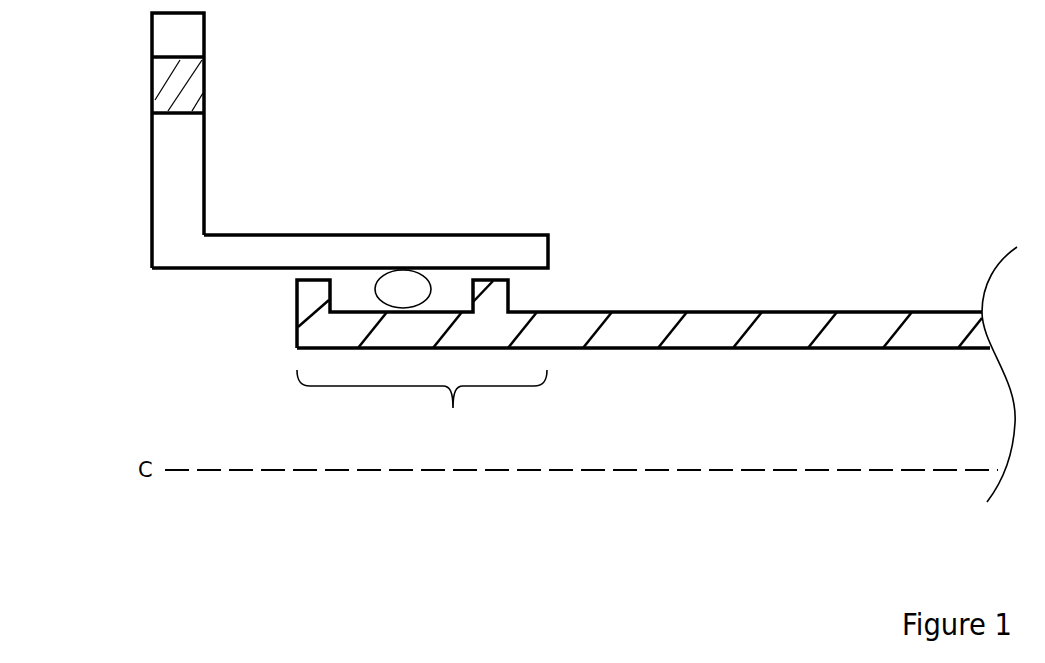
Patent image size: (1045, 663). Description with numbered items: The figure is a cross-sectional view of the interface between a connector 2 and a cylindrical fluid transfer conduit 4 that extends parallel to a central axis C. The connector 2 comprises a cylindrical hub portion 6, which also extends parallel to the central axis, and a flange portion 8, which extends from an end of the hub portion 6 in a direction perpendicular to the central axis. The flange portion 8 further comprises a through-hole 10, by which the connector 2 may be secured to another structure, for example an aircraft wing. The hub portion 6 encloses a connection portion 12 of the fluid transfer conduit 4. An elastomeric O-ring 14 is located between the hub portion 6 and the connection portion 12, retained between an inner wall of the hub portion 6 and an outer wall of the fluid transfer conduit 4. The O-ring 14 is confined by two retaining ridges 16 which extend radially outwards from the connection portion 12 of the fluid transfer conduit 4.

The connector 2 is at (302, 176).
The fluid transfer conduit 4 is at (693, 323).
The hub portion 6 is at (458, 247).
The flange portion 8 is at (183, 146).
The through-hole 10 is at (183, 85).
The connection portion 12 is at (422, 402).
The O-ring 14 is at (400, 288).
The retaining ridges 16 is at (492, 300).